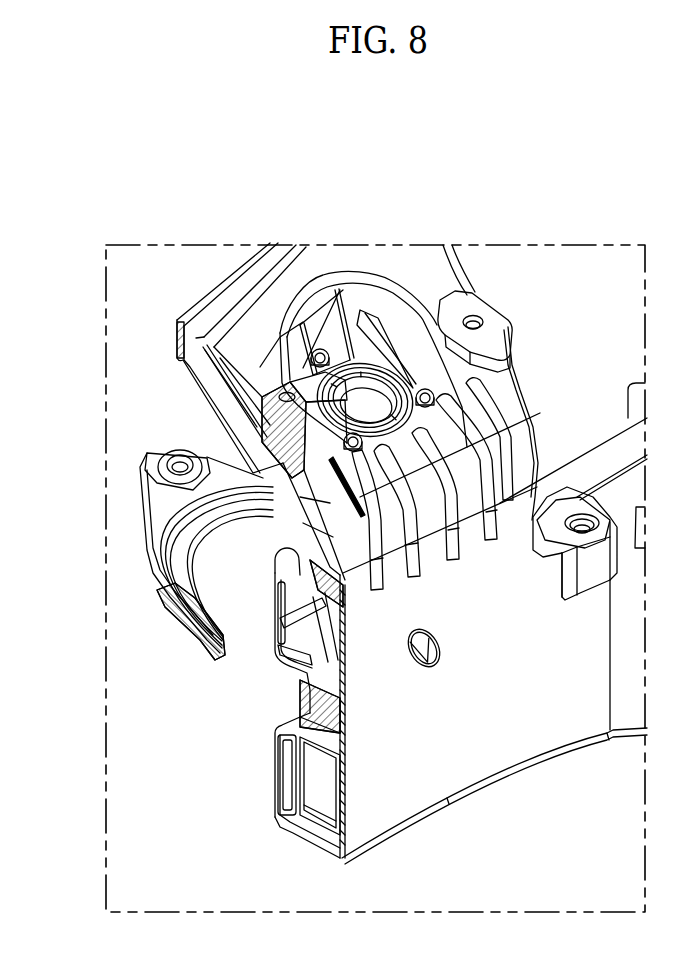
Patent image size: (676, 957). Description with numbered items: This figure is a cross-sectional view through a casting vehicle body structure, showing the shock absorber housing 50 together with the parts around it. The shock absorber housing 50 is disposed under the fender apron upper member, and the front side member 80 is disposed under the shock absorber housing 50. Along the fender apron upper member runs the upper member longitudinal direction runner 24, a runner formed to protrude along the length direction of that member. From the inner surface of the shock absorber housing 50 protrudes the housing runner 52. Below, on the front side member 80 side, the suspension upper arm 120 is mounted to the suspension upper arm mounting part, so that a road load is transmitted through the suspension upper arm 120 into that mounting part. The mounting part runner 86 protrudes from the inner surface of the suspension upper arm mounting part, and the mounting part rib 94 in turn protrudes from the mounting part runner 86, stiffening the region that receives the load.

The shock absorber housing 50 is at (533, 361).
The upper member longitudinal direction runner 24 is at (190, 340).
The housing runner 52 is at (243, 423).
The suspension upper arm 120 is at (183, 647).
The mounting part runner 86 is at (285, 833).
The mounting part rib 94 is at (326, 840).
The front side member 80 is at (505, 779).